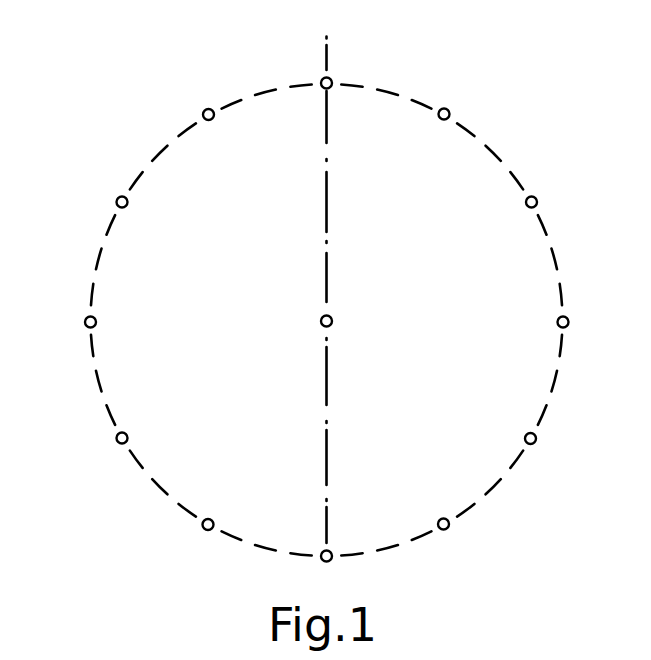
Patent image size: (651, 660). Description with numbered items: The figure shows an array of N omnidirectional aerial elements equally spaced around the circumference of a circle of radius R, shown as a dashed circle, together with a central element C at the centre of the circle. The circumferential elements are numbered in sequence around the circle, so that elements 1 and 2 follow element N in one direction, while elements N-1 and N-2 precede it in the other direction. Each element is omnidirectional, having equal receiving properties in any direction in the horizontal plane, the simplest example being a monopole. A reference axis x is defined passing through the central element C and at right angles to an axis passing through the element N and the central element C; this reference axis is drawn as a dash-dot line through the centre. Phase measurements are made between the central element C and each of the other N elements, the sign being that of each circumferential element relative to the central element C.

The reference axis x is at (333, 56).
The central element C is at (335, 311).
The aerial element 1 is at (542, 200).
The aerial element 2 is at (453, 103).
The aerial element N is at (575, 323).
The aerial element N-1 is at (555, 444).
The aerial element N-2 is at (470, 538).